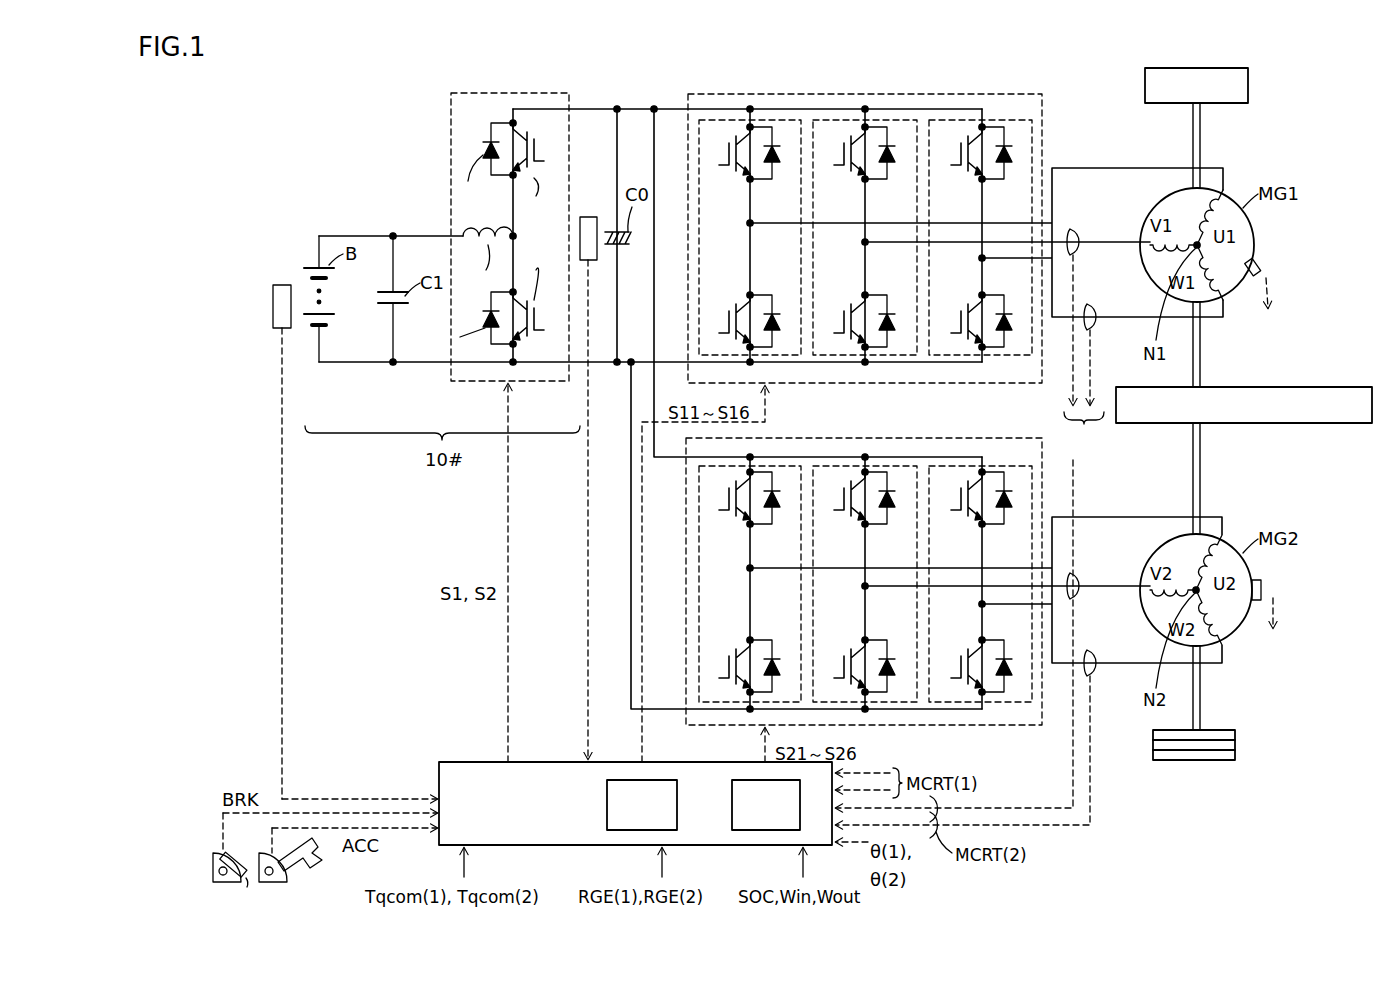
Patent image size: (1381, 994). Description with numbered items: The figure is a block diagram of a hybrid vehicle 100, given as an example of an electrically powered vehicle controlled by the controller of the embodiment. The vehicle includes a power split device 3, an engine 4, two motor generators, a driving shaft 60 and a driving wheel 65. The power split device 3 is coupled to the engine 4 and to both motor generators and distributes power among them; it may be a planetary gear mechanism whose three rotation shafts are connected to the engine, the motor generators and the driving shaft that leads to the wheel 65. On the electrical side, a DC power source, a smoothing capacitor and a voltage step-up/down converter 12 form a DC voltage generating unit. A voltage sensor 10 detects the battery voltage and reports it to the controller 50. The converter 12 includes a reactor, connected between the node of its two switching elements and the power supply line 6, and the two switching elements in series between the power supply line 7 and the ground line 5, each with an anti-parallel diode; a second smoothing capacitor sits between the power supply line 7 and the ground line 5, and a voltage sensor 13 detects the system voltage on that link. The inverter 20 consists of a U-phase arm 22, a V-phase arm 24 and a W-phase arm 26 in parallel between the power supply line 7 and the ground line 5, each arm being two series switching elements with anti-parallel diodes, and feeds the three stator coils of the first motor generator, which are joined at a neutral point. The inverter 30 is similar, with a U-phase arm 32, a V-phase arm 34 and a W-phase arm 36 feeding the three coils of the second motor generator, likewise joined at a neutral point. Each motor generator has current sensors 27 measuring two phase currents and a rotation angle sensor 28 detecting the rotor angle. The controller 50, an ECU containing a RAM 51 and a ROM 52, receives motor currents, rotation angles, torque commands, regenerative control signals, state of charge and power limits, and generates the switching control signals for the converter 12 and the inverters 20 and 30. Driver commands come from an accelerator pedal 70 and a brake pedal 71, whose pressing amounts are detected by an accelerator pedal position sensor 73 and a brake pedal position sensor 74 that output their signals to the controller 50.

The hybrid vehicle 100 is at (1380, 100).
The power split device 3 is at (1333, 387).
The engine 4 is at (1249, 88).
The ground line 5 is at (357, 362).
The power supply line 6 is at (411, 236).
The power supply line 7 is at (640, 109).
The voltage sensor 10 is at (282, 285).
The voltage step-up/down converter 12 is at (461, 382).
The voltage sensor 13 is at (588, 217).
The inverter 20 is at (865, 241).
The U-phase arm 22 is at (765, 120).
The V-phase arm 24 is at (888, 120).
The W-phase arm 26 is at (1005, 120).
The current sensor 27 is at (1080, 236).
The rotation angle sensor 28 is at (1260, 262).
The inverter 30 is at (866, 582).
The U-phase arm 32 is at (780, 463).
The V-phase arm 34 is at (897, 466).
The W-phase arm 36 is at (1013, 466).
The controller 50 is at (635, 779).
The RAM 51 is at (677, 805).
The ROM 52 is at (800, 805).
The drive shaft 60 is at (1203, 697).
The wheel 65 is at (1197, 760).
The accelerator pedal 70 is at (295, 876).
The brake pedal 71 is at (240, 882).
The accelerator pedal position sensor 73 is at (268, 880).
The brake pedal position sensor 74 is at (222, 880).